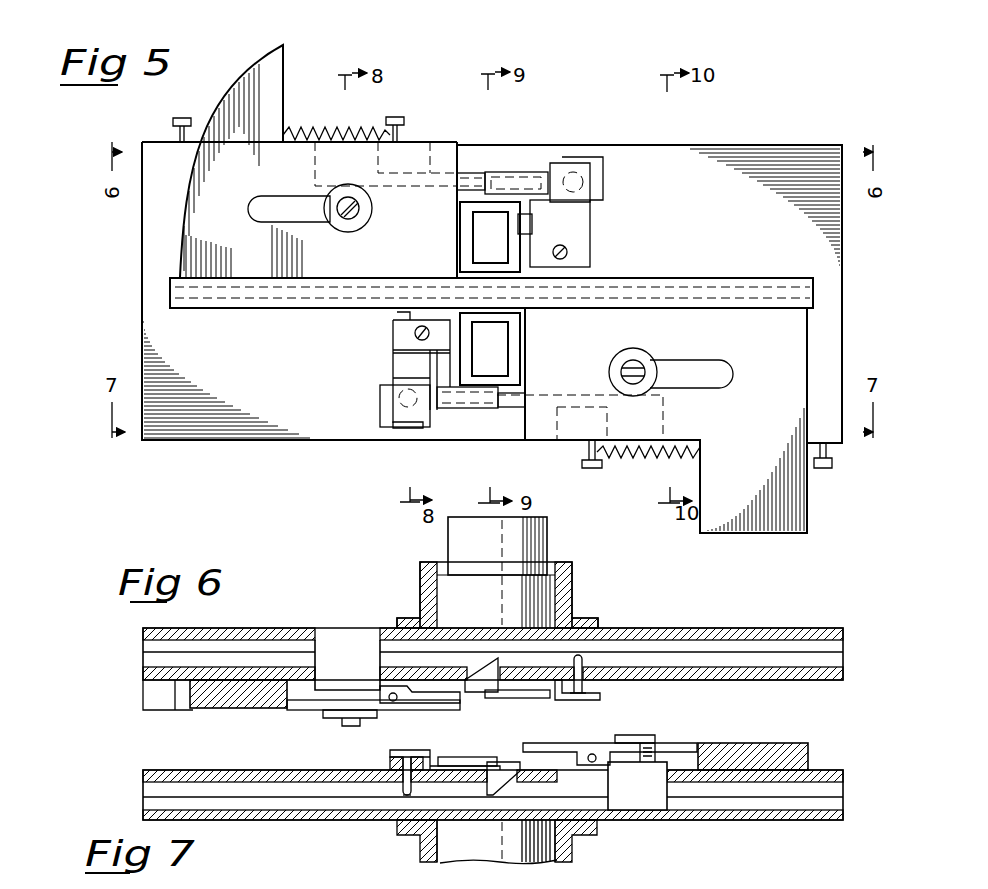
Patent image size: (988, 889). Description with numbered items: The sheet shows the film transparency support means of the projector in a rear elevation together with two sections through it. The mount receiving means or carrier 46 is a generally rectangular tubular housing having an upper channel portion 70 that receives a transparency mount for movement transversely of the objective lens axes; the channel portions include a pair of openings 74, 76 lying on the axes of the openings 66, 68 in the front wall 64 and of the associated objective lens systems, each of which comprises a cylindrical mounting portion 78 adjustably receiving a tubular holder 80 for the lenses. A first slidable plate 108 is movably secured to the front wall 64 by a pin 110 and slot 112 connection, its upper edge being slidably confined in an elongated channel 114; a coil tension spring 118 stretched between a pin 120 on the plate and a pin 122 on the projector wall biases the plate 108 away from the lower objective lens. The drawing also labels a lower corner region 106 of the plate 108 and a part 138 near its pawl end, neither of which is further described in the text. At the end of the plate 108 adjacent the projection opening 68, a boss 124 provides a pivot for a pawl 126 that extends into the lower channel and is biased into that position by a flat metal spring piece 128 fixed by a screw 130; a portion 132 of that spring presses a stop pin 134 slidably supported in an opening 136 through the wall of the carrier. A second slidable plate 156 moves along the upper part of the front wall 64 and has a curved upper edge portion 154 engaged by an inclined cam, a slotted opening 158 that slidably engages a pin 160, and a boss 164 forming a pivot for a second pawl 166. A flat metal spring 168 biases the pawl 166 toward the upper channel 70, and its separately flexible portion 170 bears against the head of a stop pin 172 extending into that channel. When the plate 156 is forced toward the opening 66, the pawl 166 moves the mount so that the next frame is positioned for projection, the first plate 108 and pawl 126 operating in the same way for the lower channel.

In FIG. 5, the mount receiving means 46 is at (744, 142).
In FIG. 7, the mount receiving means 46 is at (497, 854).
In FIG. 5, the front wall 64 is at (694, 222).
In FIG. 5, the opening 66 is at (468, 258).
In FIG. 5, the opening 68 is at (517, 348).
In FIG. 6, the upper channel portion 70 is at (738, 660).
In FIG. 5, the opening 74 is at (481, 231).
In FIG. 5, the opening 76 is at (503, 334).
In FIG. 6, the cylindrical mounting portion 78 is at (550, 592).
In FIG. 7, the cylindrical mounting portion 78 is at (497, 854).
In FIG. 6, the tubular holder 80 is at (547, 533).
In FIG. 5, the cam surface 106 is at (767, 533).
In FIG. 5, the slidable plate 108 is at (760, 421).
In FIG. 7, the slidable plate 108 is at (742, 742).
In FIG. 5, the pin 110 is at (635, 360).
In FIG. 7, the pin 110 is at (632, 750).
In FIG. 5, the slot 112 is at (677, 368).
In FIG. 5, the elongated channel 114 is at (733, 302).
In FIG. 7, the elongated channel 114 is at (305, 788).
In FIG. 5, the coil tension spring 118 is at (661, 455).
In FIG. 5, the pin 120 is at (592, 468).
In FIG. 5, the pin 122 is at (826, 468).
In FIG. 7, the boss 124 is at (597, 742).
In FIG. 5, the pawl 126 is at (510, 408).
In FIG. 7, the pawl 126 is at (512, 765).
In FIG. 5, the flat metal spring piece 128 is at (455, 410).
In FIG. 7, the flat metal spring piece 128 is at (468, 757).
In FIG. 5, the screw 130 is at (413, 336).
In FIG. 5, the portion 132 is at (393, 412).
In FIG. 7, the portion 132 is at (407, 752).
In FIG. 7, the stop pin 134 is at (402, 788).
In FIG. 7, the opening 136 is at (400, 770).
In FIG. 5, the lever 138 is at (523, 428).
In FIG. 7, the lever 138 is at (523, 742).
In FIG. 5, the curved upper edge portion 154 is at (250, 50).
In FIG. 6, the curved upper edge portion 154 is at (175, 700).
In FIG. 5, the second slidable plate 156 is at (308, 178).
In FIG. 6, the second slidable plate 156 is at (288, 716).
In FIG. 5, the slotted opening 158 is at (267, 215).
In FIG. 5, the pin 160 is at (347, 219).
In FIG. 6, the pin 160 is at (345, 720).
In FIG. 6, the boss 164 is at (405, 705).
In FIG. 5, the pawl 166 is at (475, 184).
In FIG. 6, the pawl 166 is at (482, 688).
In FIG. 5, the flat metal spring 168 is at (522, 180).
In FIG. 6, the flat metal spring 168 is at (512, 699).
In FIG. 5, the separately flexible portion 170 is at (573, 167).
In FIG. 6, the separately flexible portion 170 is at (594, 700).
In FIG. 6, the stop pin 172 is at (581, 665).